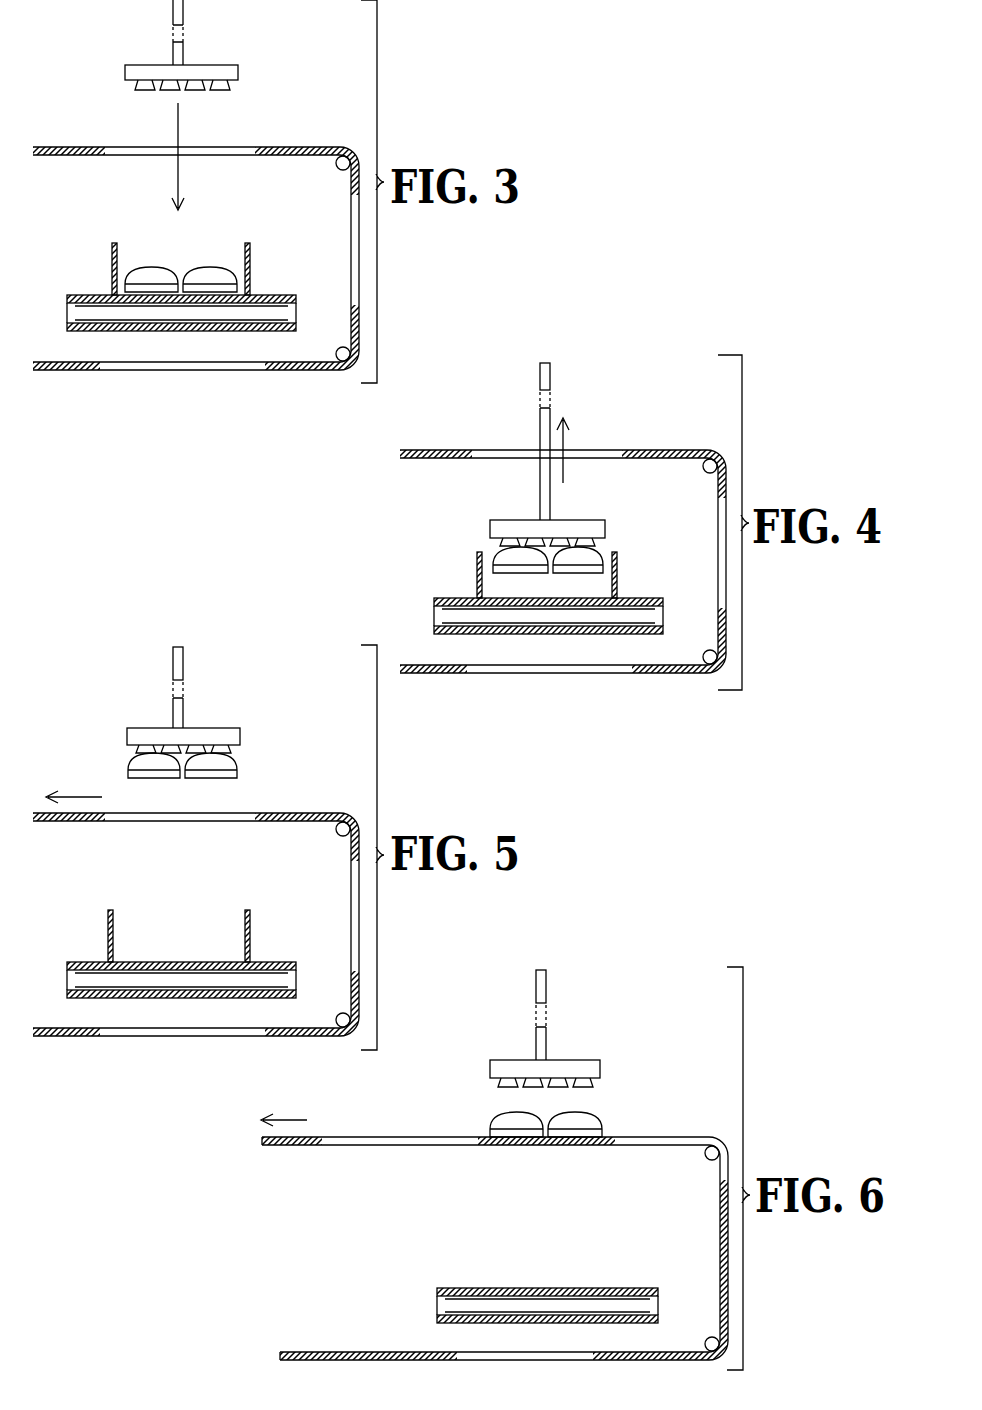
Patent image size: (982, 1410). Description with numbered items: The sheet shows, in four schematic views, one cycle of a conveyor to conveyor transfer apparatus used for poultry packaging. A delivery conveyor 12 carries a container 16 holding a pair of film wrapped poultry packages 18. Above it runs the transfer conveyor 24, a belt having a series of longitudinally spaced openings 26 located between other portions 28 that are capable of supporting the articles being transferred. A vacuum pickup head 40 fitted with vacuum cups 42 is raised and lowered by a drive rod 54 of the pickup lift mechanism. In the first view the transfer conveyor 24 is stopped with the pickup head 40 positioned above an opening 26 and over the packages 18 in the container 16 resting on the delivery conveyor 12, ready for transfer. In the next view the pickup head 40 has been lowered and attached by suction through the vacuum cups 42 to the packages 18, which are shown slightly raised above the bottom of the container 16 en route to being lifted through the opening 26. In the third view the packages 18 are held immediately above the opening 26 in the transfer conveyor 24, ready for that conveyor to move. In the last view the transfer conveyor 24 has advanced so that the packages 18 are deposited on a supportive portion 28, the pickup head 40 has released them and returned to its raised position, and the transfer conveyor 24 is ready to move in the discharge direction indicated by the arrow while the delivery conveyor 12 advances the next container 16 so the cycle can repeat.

In FIG. 3, the delivery conveyor 12 is at (95, 295).
In FIG. 4, the delivery conveyor 12 is at (547, 597).
In FIG. 5, the delivery conveyor 12 is at (177, 959).
In FIG. 6, the delivery conveyor 12 is at (547, 1287).
In FIG. 3, the container 16 is at (250, 273).
In FIG. 4, the container 16 is at (568, 574).
In FIG. 5, the container 16 is at (206, 936).
In FIG. 3, the film wrapped poultry packages 18 is at (198, 266).
In FIG. 4, the film wrapped poultry packages 18 is at (573, 544).
In FIG. 5, the film wrapped poultry packages 18 is at (210, 758).
In FIG. 6, the film wrapped poultry packages 18 is at (564, 1111).
In FIG. 3, the transfer conveyor 24 is at (351, 136).
In FIG. 4, the transfer conveyor 24 is at (563, 532).
In FIG. 5, the transfer conveyor 24 is at (199, 894).
In FIG. 6, the transfer conveyor 24 is at (495, 1213).
In FIG. 3, the opening 26 is at (228, 150).
In FIG. 4, the opening 26 is at (559, 538).
In FIG. 5, the opening 26 is at (192, 904).
In FIG. 6, the opening 26 is at (491, 1226).
In FIG. 3, the supportive portion 28 is at (68, 148).
In FIG. 4, the supportive portion 28 is at (561, 539).
In FIG. 5, the supportive portion 28 is at (194, 906).
In FIG. 6, the supportive portion 28 is at (493, 1230).
In FIG. 3, the vacuum pickup head 40 is at (239, 72).
In FIG. 4, the vacuum pickup head 40 is at (571, 510).
In FIG. 5, the vacuum pickup head 40 is at (208, 721).
In FIG. 6, the vacuum pickup head 40 is at (571, 1056).
In FIG. 3, the vacuum cups 42 is at (228, 89).
In FIG. 4, the vacuum cups 42 is at (518, 528).
In FIG. 5, the vacuum cups 42 is at (155, 746).
In FIG. 6, the vacuum cups 42 is at (522, 1086).
In FIG. 3, the drive rod 54 is at (185, 16).
In FIG. 4, the drive rod 54 is at (574, 440).
In FIG. 5, the drive rod 54 is at (205, 687).
In FIG. 6, the drive rod 54 is at (571, 1015).